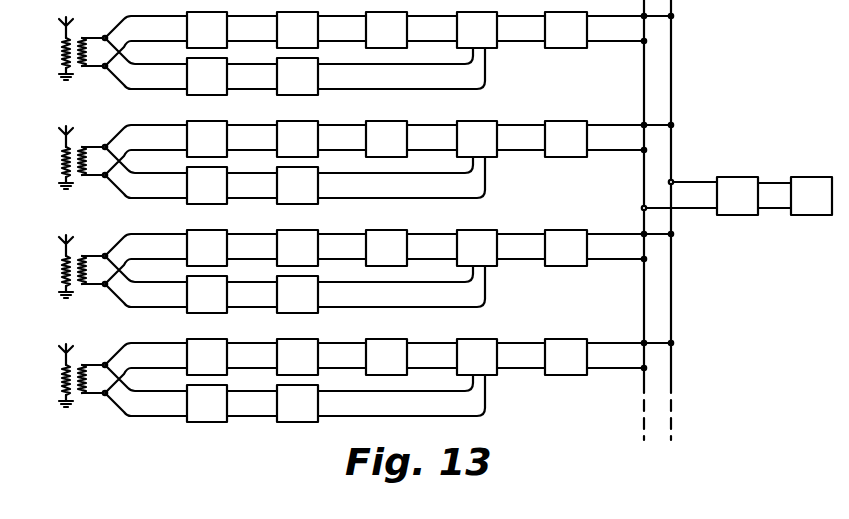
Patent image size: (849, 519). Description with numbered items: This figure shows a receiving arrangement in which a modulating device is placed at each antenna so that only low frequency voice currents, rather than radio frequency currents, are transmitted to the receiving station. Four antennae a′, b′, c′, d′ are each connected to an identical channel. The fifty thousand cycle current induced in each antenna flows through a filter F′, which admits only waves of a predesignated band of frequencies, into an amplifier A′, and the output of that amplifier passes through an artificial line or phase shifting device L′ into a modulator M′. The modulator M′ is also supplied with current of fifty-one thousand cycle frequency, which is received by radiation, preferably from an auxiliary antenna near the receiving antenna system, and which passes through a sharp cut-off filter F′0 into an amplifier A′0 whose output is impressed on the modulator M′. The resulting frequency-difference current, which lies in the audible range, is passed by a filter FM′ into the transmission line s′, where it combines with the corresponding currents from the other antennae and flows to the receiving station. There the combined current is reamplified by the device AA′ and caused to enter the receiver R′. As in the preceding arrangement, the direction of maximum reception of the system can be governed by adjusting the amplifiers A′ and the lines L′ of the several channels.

The antenna a′ is at (66, 48).
The antenna b′ is at (66, 157).
The antenna c′ is at (66, 266).
The antenna d′ is at (66, 375).
The filter F′ is at (207, 193).
The amplifier A′ is at (297, 193).
The artificial line or phase shifting device L′ is at (386, 193).
The modulator M′ is at (477, 193).
The filter FM′ is at (566, 193).
The sharp cut-off filter F′0 is at (207, 240).
The amplifier A′0 is at (297, 240).
The transmission line s′ is at (661, 112).
The reamplifying device AA′ is at (737, 196).
The receiver R′ is at (811, 196).